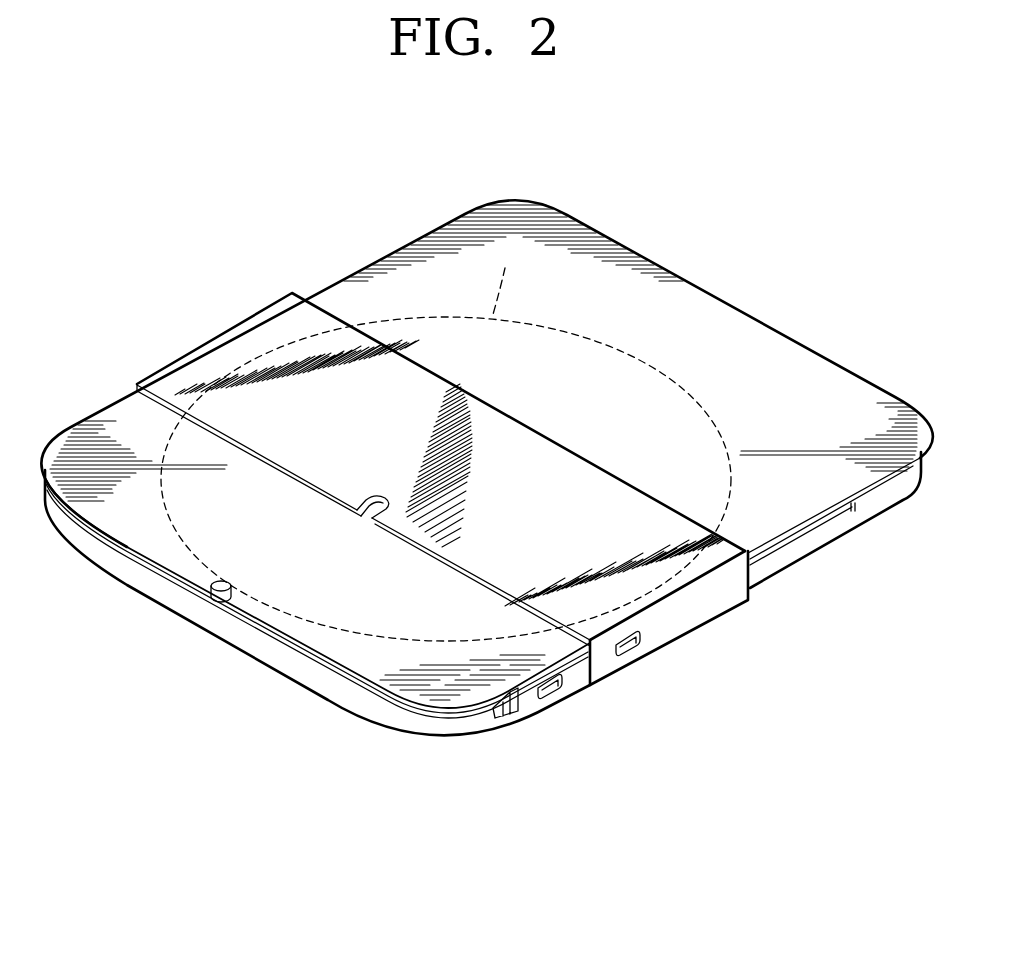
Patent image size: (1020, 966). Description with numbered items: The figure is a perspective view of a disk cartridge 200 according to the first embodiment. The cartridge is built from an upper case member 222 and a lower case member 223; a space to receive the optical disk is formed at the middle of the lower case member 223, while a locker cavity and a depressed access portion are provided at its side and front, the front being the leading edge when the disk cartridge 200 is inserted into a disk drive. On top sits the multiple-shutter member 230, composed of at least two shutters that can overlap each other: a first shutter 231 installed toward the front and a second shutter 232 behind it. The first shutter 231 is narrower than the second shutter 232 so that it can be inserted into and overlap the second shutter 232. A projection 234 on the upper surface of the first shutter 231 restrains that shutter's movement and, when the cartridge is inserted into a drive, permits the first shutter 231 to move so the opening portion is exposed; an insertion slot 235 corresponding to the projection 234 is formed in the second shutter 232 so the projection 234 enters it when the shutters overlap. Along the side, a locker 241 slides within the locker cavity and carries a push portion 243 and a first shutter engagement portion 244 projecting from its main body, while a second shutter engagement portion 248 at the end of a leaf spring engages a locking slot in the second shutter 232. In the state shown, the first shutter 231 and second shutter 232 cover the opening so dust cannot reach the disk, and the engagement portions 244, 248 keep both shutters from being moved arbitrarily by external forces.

The disk cartridge 200 is at (274, 252).
The upper case member 222 is at (795, 533).
The lower case member 223 is at (763, 573).
The multiple-shutter member 230 is at (217, 243).
The first shutter 231 is at (120, 413).
The second shutter 232 is at (245, 333).
The projection 234 is at (218, 601).
The insertion slot 235 is at (379, 494).
The locker 241 is at (708, 726).
The push portion 243 is at (512, 714).
The first shutter engagement portion 244 is at (553, 690).
The second shutter engagement portion 248 is at (638, 645).